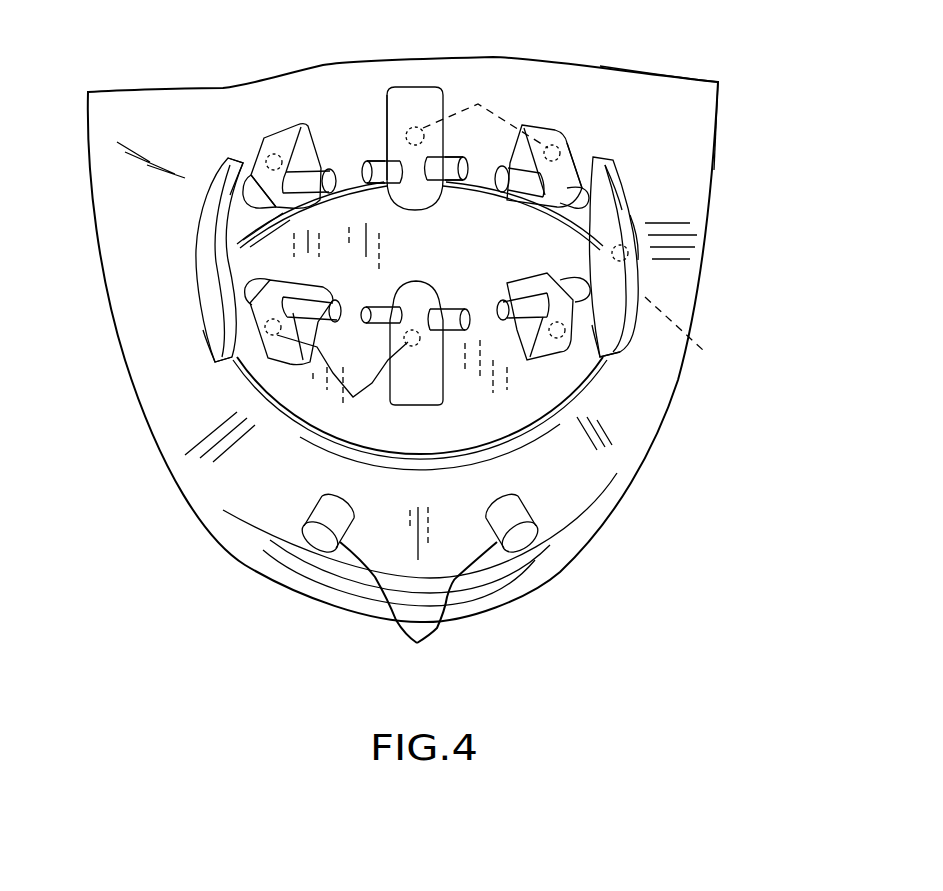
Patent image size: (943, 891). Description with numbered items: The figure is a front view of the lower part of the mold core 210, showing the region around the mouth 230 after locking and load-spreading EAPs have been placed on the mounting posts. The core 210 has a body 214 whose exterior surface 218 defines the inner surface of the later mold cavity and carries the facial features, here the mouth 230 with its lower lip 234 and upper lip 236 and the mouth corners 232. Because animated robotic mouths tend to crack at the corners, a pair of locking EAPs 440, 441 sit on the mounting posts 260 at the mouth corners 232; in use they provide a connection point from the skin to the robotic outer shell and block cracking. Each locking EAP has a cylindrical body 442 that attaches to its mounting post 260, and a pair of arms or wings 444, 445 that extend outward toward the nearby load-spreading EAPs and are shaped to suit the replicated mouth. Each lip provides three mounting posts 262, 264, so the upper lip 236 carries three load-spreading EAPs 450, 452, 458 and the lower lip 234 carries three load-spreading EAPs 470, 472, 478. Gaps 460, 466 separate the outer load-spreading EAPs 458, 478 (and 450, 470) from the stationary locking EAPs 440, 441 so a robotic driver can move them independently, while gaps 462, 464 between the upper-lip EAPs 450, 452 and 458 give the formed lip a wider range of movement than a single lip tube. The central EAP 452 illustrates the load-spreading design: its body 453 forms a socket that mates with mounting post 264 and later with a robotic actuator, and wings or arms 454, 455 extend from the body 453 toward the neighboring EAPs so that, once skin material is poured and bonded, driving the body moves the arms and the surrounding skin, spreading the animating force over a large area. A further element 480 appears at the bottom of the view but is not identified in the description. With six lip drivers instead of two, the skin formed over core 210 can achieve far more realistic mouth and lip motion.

The mold core 210 is at (697, 458).
The body 214 is at (718, 117).
The exterior surface 218 is at (685, 107).
The mouth 230 is at (600, 360).
The mouth corners 232 is at (590, 260).
The lower lip 234 is at (262, 356).
The upper lip 236 is at (237, 147).
The mounting posts 260 is at (692, 333).
The mounting posts 262 is at (342, 383).
The mounting post 264 is at (485, 111).
The locking EAP 440 is at (648, 271).
The locking EAP 441 is at (195, 265).
The cylindrical body 442 is at (637, 233).
The arm or wing 444 is at (625, 190).
The arm or wing 445 is at (633, 340).
The load-spreading EAP 450 is at (294, 133).
The load-spreading EAP 452 is at (415, 92).
The body 453 is at (390, 117).
The wing or arm 454 is at (396, 197).
The wing or arm 455 is at (440, 198).
The load-spreading EAP 458 is at (569, 135).
The gap 460 is at (587, 160).
The gap or spacing 462 is at (460, 157).
The gap or spacing 464 is at (348, 186).
The gap 466 is at (242, 180).
The load-spreading EAP 470 is at (290, 372).
The load-spreading EAP 472 is at (420, 412).
The load-spreading EAP 478 is at (547, 368).
The connector 480 is at (420, 586).